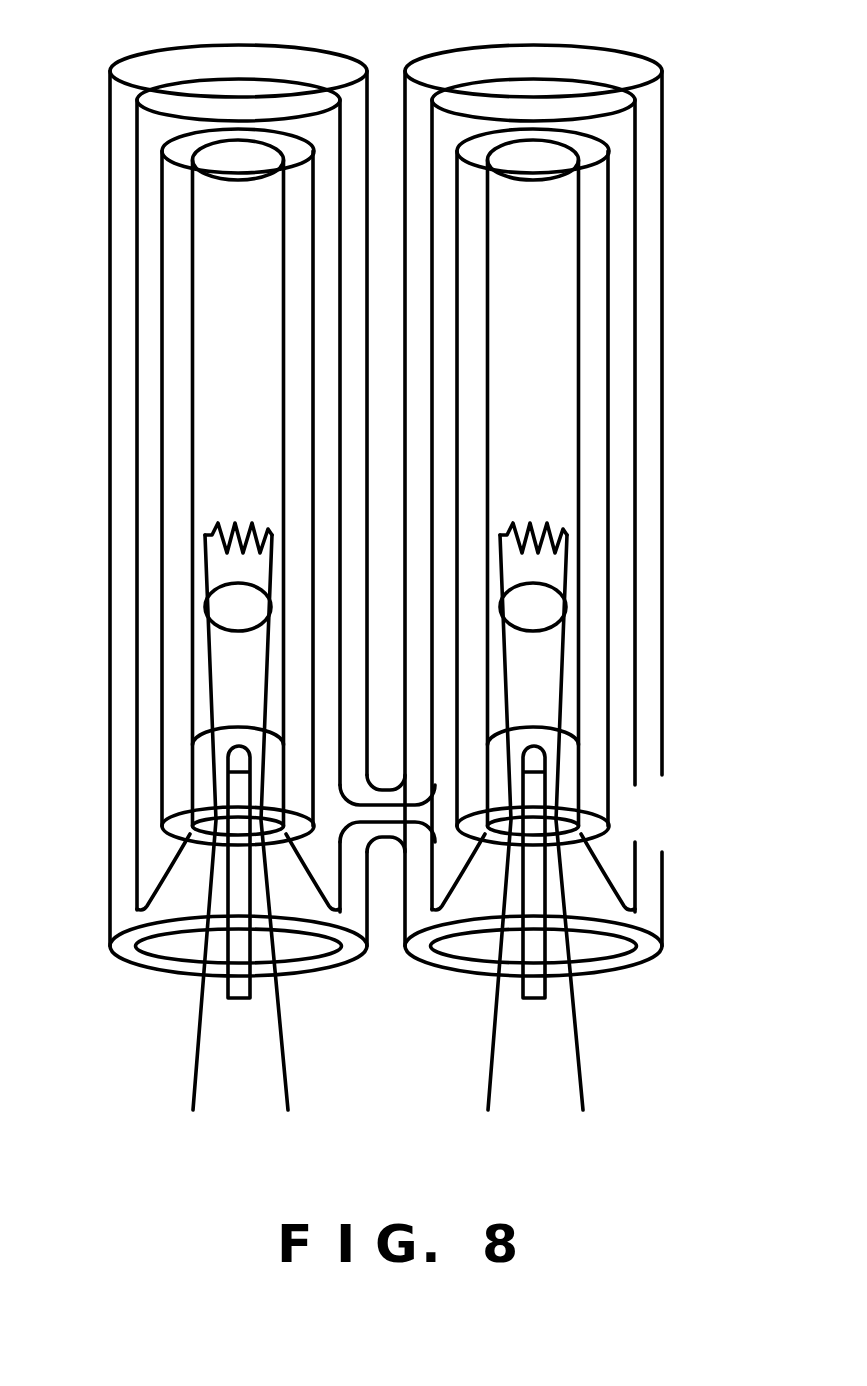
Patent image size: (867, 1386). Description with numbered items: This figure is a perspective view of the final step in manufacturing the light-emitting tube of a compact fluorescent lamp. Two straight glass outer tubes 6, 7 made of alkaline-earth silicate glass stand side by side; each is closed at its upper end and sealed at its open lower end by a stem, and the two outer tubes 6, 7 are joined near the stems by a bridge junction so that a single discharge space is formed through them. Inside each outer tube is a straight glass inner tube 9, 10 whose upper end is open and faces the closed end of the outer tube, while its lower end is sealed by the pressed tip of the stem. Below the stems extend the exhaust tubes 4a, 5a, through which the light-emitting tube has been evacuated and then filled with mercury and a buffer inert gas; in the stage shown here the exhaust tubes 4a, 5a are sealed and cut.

The glass outer tube 6 is at (123, 380).
The glass outer tube 7 is at (650, 365).
The glass inner tube 9 is at (177, 543).
The glass inner tube 10 is at (597, 494).
The exhaust tube 4a is at (240, 990).
The exhaust tube 5a is at (545, 993).